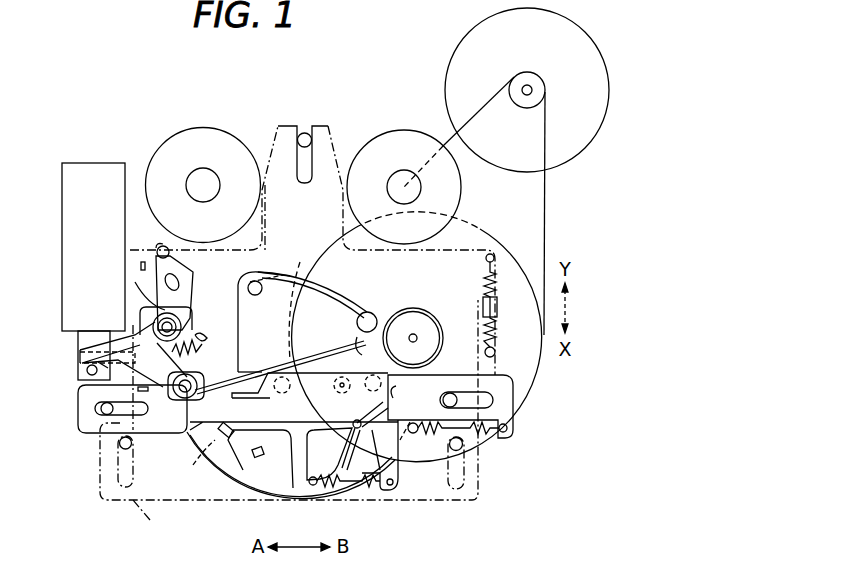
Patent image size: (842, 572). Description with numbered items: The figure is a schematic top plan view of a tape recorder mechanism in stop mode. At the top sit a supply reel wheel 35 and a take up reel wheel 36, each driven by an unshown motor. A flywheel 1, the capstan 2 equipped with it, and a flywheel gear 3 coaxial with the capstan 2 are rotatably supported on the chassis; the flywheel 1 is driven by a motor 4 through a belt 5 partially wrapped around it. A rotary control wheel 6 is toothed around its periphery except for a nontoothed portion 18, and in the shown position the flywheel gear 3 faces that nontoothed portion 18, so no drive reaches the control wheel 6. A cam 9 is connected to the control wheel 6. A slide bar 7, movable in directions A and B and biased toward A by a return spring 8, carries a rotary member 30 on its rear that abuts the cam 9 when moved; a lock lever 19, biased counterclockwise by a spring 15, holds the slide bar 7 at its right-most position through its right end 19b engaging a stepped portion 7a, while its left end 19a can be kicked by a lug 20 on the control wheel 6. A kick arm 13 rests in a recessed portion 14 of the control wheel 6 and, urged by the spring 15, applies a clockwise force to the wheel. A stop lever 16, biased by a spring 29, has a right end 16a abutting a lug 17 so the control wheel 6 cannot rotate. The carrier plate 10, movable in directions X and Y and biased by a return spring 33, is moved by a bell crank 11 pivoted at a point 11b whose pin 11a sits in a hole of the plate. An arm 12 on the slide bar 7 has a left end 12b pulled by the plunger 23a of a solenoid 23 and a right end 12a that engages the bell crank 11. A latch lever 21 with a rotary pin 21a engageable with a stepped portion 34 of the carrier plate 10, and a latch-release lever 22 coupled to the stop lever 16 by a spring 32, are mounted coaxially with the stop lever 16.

The flywheel 1 is at (480, 240).
The capstan 2 is at (413, 334).
The flywheel gear 3 is at (442, 318).
The motor 4 is at (588, 136).
The belt 5 is at (545, 224).
The rotary control wheel 6 is at (293, 272).
The slide bar 7 is at (505, 393).
The stepped portion 7a is at (393, 398).
The return spring 8 is at (478, 437).
The cam 9 is at (280, 360).
The carrier plate 10 is at (162, 528).
The bell crank 11 is at (322, 300).
The pin 11a is at (364, 312).
The pivot point 11b is at (258, 282).
The arm 12 is at (158, 420).
The right end of arm 12a is at (268, 352).
The left end of arm 12b is at (78, 364).
The kick arm 13 is at (412, 478).
The recessed portion 14 is at (335, 470).
The spring 15 is at (381, 490).
The stop lever 16 is at (133, 318).
The right end of stop lever 16a is at (178, 434).
The lug 17 is at (193, 465).
The nontoothed portion 18 is at (366, 343).
The lock lever 19 is at (296, 472).
The left end of lock lever 19a is at (225, 470).
The right end of lock lever 19b is at (363, 486).
The lug 20 is at (258, 458).
The latch lever 21 is at (180, 268).
The rotary pin 21a is at (163, 246).
The latch-release lever 22 is at (196, 300).
The solenoid 23 is at (99, 170).
The plunger 23a is at (80, 345).
The spring 29 is at (140, 284).
The rotary member 30 is at (310, 382).
The spring 32 is at (205, 343).
The return spring 33 is at (495, 337).
The stepped portion 34 is at (150, 284).
The supply reel wheel 35 is at (206, 133).
The take up reel wheel 36 is at (406, 133).